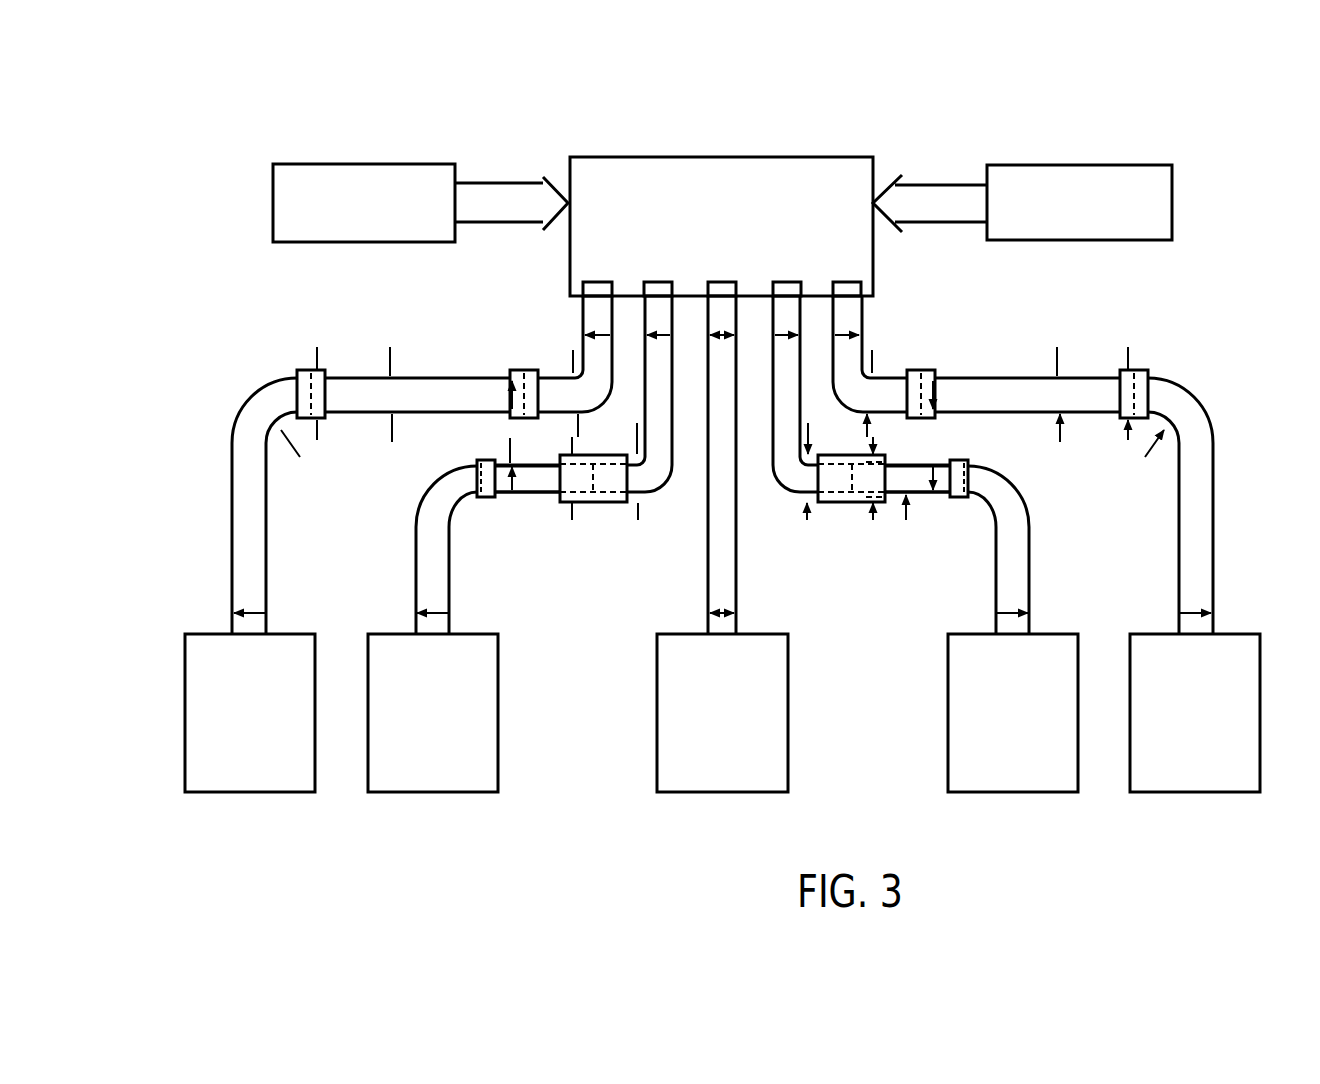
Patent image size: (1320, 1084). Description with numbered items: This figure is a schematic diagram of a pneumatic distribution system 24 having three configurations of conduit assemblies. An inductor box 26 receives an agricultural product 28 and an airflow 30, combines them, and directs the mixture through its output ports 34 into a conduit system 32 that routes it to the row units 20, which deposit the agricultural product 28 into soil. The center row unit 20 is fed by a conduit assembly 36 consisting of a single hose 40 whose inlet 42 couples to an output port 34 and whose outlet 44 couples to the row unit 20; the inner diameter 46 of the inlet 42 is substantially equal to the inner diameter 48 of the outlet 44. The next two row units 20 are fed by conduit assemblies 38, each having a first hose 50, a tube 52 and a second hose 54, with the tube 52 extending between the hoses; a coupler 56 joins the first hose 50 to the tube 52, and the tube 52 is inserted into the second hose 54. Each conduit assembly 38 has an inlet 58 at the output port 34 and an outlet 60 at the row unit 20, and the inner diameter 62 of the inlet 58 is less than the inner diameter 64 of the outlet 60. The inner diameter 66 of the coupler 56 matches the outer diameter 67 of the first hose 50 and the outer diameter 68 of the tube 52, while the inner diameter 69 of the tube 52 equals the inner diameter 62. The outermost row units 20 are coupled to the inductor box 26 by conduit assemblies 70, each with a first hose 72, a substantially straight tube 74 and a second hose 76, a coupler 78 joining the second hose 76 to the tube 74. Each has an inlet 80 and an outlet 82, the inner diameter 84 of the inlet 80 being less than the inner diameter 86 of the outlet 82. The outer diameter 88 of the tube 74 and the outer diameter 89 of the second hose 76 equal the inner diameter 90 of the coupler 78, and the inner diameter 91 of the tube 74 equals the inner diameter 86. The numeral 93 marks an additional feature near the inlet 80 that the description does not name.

The row unit 20 is at (252, 793).
The pneumatic distribution system 24 is at (197, 178).
The inductor box 26 is at (715, 157).
The agricultural product 28 is at (362, 163).
The airflow 30 is at (1079, 163).
The conduit system 32 is at (203, 366).
The output port 34 is at (660, 281).
The conduit assembly 36 is at (782, 555).
The conduit assembly 38 is at (478, 533).
The hose 40 is at (740, 483).
The inlet 42 is at (740, 300).
The outlet 44 is at (707, 632).
The inner diameter 46 is at (722, 337).
The inner diameter 48 is at (733, 613).
The first hose 50 is at (662, 488).
The tube 52 is at (525, 462).
The second hose 54 is at (413, 527).
The coupler 56 is at (595, 505).
The inlet 58 is at (673, 300).
The outlet 60 is at (452, 633).
The inner diameter 62 is at (657, 338).
The inner diameter 64 is at (433, 609).
The inner diameter 66 is at (575, 512).
The outer diameter 67 is at (637, 513).
The outer diameter 68 is at (508, 442).
The inner diameter 69 is at (513, 478).
The conduit assembly 70 is at (322, 469).
The first hose 72 is at (546, 372).
The tube 74 is at (432, 375).
The second hose 76 is at (232, 492).
The coupler 78 is at (308, 368).
The inlet 80 is at (612, 300).
The outlet 82 is at (268, 633).
The inner diameter 84 is at (583, 336).
The inner diameter 86 is at (250, 609).
The outer diameter 88 is at (388, 346).
The outer diameter 89 is at (257, 383).
The inner diameter 90 is at (320, 345).
The inner diameter 91 is at (508, 388).
The outer hose inlet section 93 is at (572, 352).